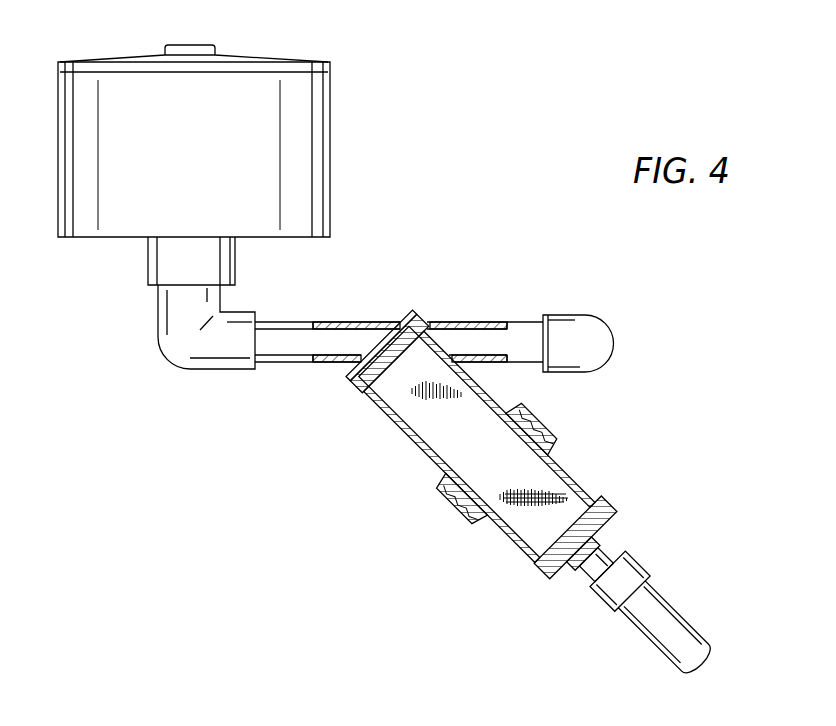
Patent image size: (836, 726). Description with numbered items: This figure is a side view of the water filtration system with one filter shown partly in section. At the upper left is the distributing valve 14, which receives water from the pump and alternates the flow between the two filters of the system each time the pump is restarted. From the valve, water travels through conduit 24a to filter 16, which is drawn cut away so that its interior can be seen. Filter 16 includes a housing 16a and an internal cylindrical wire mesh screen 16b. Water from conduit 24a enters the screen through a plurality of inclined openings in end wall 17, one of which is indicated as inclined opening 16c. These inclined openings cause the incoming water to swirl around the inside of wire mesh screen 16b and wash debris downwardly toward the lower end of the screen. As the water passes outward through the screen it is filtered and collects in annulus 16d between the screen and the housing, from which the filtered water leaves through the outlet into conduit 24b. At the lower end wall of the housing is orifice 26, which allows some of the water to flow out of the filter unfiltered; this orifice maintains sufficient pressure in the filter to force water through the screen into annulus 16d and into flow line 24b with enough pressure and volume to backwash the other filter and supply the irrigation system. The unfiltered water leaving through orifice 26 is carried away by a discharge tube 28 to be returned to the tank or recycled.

The distributing valve 14 is at (332, 130).
The filter 16 is at (516, 488).
The housing 16a is at (452, 474).
The internal cylindrical wire mesh screen 16b is at (461, 500).
The inclined opening 16c is at (387, 351).
The annulus 16d is at (533, 428).
The end wall 17 is at (389, 356).
The conduit 24a is at (313, 322).
The conduit 24b is at (505, 322).
The orifice 26 is at (620, 581).
The discharge tube 28 is at (666, 629).